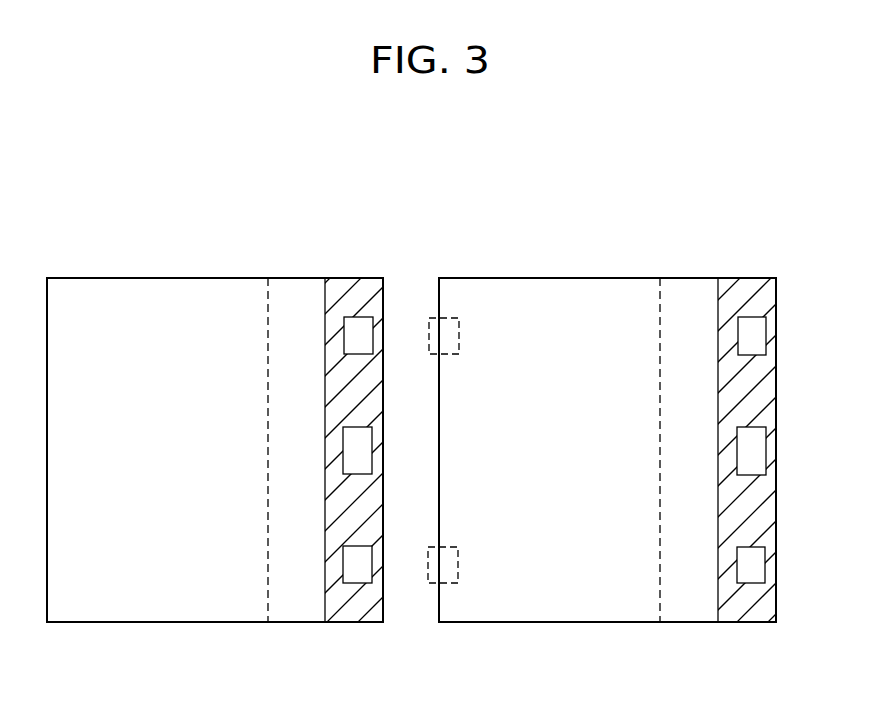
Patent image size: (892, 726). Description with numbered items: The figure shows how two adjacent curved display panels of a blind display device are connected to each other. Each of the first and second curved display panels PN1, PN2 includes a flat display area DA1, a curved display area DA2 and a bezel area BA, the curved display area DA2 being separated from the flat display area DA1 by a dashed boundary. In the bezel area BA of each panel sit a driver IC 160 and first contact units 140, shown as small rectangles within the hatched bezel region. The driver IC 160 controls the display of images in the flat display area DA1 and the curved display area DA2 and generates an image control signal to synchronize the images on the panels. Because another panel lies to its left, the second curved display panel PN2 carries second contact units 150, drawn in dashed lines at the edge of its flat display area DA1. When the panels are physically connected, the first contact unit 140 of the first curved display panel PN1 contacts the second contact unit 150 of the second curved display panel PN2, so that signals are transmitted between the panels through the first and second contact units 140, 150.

The first contact unit 140 is at (356, 327).
The second contact unit 150 is at (433, 325).
The driver IC 160 is at (358, 465).
The first curved display panel PN1 is at (205, 252).
The second curved display panel PN2 is at (595, 253).
The bezel area BA is at (356, 288).
The flat display area DA1 is at (354, 452).
The curved display area DA2 is at (486, 450).